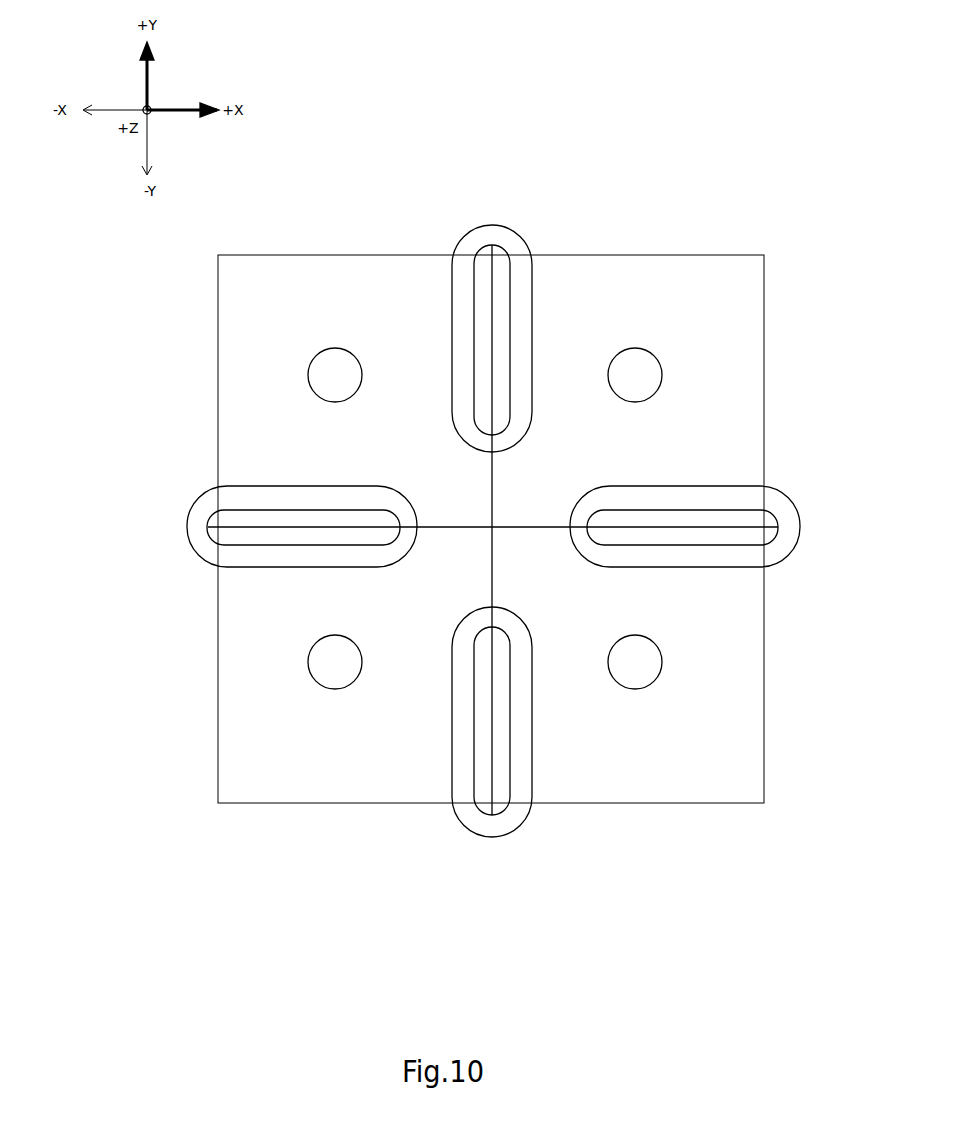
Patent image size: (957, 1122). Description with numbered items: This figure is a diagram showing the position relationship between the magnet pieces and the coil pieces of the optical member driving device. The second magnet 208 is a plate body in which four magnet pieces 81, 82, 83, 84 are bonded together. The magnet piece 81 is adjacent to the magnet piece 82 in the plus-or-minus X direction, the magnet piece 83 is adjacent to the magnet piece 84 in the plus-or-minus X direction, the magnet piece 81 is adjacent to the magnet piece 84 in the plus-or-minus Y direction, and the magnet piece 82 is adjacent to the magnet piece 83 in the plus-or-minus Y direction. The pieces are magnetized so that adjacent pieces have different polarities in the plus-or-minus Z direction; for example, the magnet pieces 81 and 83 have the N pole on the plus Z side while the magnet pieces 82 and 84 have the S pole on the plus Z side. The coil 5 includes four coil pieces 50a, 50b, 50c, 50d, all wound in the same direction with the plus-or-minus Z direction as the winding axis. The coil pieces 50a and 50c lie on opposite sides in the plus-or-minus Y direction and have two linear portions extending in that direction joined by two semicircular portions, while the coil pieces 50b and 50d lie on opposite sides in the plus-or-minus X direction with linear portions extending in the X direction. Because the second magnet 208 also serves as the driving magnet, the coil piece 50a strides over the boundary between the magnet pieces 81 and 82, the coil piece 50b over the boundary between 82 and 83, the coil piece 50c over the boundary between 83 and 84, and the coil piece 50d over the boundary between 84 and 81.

The coil 5 is at (507, 283).
The coil piece 50a is at (492, 225).
The coil piece 50b is at (187, 527).
The coil piece 50c is at (485, 840).
The coil piece 50d is at (800, 527).
The magnet piece 81 is at (752, 365).
The magnet piece 82 is at (232, 358).
The magnet piece 83 is at (232, 688).
The magnet piece 84 is at (752, 688).
The second magnet 208 is at (696, 808).